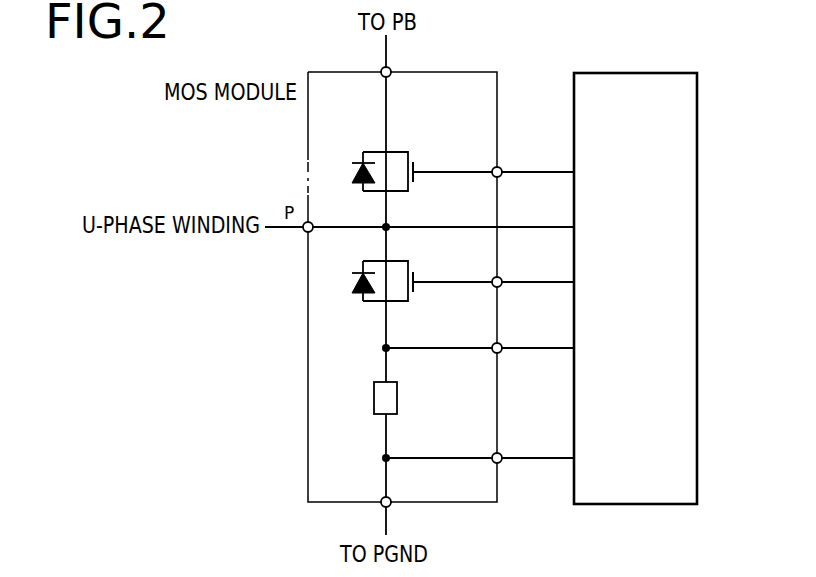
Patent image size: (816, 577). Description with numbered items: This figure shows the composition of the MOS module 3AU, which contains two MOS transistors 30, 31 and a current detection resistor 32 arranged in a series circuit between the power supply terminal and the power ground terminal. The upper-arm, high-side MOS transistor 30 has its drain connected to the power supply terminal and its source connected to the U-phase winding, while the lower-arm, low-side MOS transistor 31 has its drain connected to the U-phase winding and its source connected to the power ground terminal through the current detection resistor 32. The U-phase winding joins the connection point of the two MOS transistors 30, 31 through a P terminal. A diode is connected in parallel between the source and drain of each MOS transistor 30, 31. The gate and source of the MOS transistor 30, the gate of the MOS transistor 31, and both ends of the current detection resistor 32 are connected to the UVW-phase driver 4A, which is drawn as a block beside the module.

The MOS transistor 30 is at (367, 150).
The MOS transistor 31 is at (372, 306).
The current detection resistor 32 is at (380, 415).
The MOS module 3AU is at (487, 72).
The UVW-phase driver 4A is at (623, 73).